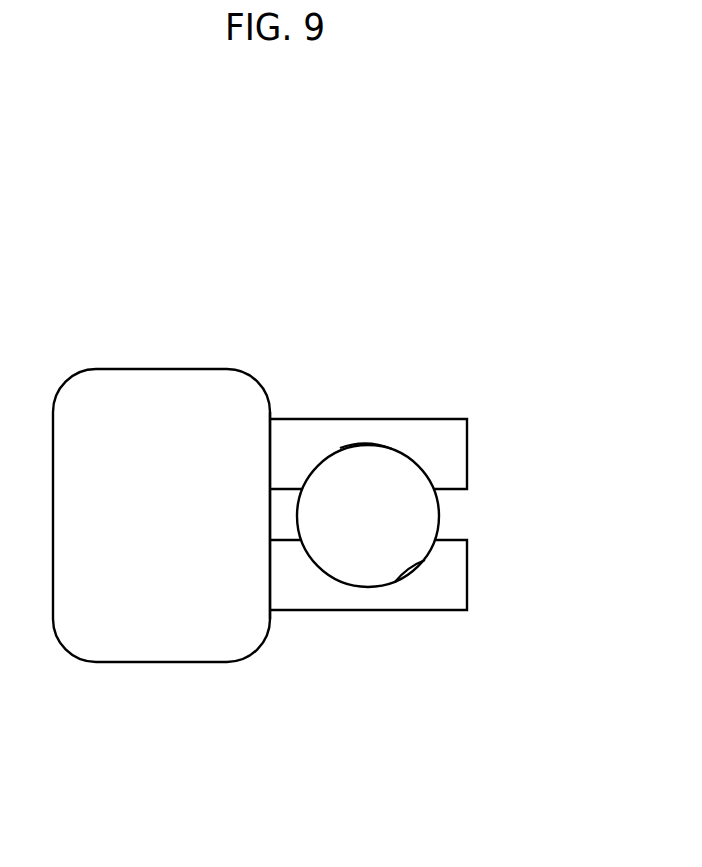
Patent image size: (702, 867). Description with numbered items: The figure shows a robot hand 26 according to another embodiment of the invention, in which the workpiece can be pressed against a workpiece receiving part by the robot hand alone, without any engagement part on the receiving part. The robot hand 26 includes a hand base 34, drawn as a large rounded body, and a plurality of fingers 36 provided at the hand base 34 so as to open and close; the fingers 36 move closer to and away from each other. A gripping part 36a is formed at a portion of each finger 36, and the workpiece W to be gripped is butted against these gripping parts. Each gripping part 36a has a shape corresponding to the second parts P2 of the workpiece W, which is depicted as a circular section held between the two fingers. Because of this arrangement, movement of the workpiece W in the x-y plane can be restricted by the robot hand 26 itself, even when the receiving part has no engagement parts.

The robot hand 26 is at (75, 352).
The hand base 34 is at (142, 642).
The fingers 36 is at (453, 452).
The gripping part 36a is at (382, 445).
The workpiece W is at (417, 512).
The second parts P2 is at (415, 460).